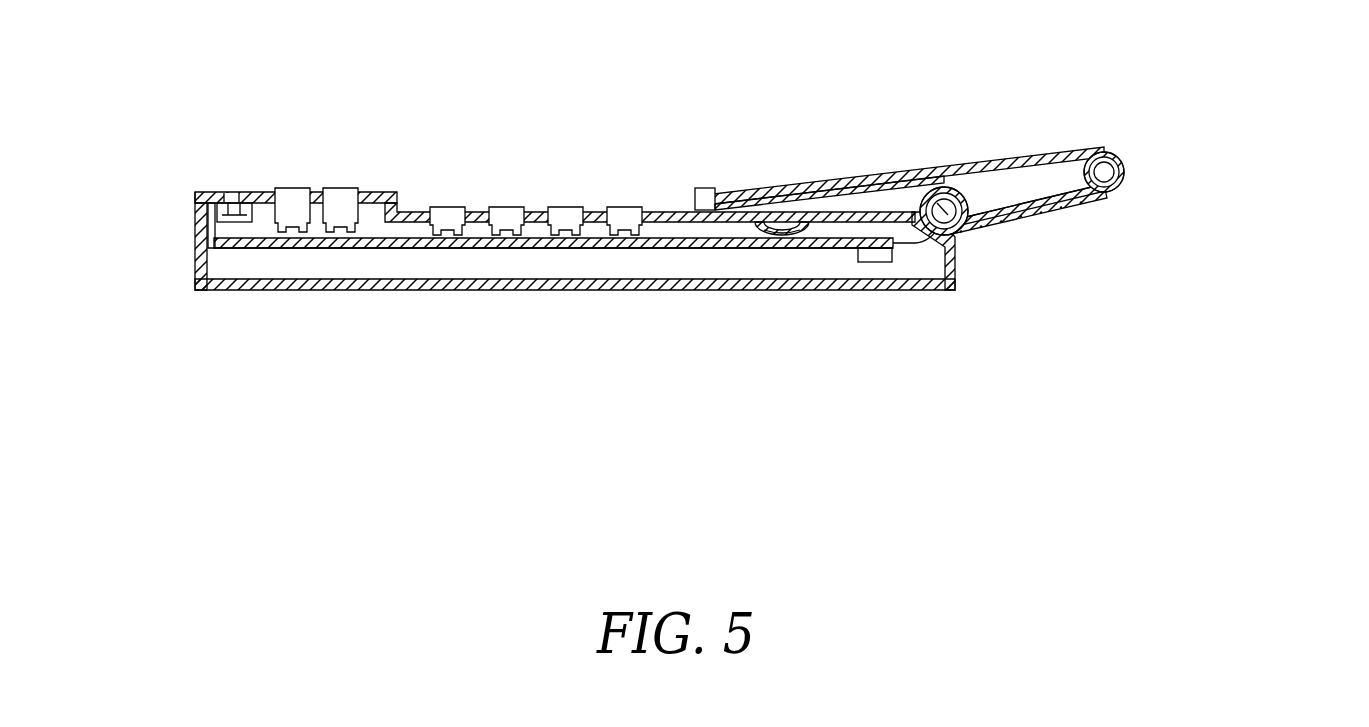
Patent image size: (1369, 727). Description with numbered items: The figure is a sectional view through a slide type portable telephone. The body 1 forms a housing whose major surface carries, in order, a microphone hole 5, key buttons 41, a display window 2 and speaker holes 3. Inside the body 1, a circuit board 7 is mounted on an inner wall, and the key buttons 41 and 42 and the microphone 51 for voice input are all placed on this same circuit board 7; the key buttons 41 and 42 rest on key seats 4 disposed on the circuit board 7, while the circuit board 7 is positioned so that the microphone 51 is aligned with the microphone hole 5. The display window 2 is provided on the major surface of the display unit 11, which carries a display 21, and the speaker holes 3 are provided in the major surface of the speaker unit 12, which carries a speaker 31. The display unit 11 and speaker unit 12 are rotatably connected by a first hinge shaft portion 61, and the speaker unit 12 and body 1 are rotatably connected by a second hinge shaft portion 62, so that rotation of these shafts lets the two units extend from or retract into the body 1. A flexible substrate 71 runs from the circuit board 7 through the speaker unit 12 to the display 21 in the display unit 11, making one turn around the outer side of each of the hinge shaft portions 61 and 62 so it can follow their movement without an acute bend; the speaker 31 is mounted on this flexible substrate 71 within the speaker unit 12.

The body 1 is at (577, 290).
The display window 2 is at (868, 176).
The speaker holes 3 is at (1041, 226).
The key seats 4 is at (400, 249).
The microphone hole 5 is at (228, 192).
The circuit board 7 is at (825, 249).
The display unit 11 is at (854, 116).
The speaker unit 12 is at (1154, 286).
The display 21 is at (958, 112).
The speaker 31 is at (1003, 228).
The key buttons 41 is at (297, 187).
The key buttons 42 is at (443, 206).
The microphone 51 is at (233, 226).
The first hinge shaft portion 61 is at (1124, 167).
The second hinge shaft portion 62 is at (968, 233).
The flexible substrate 71 is at (914, 250).